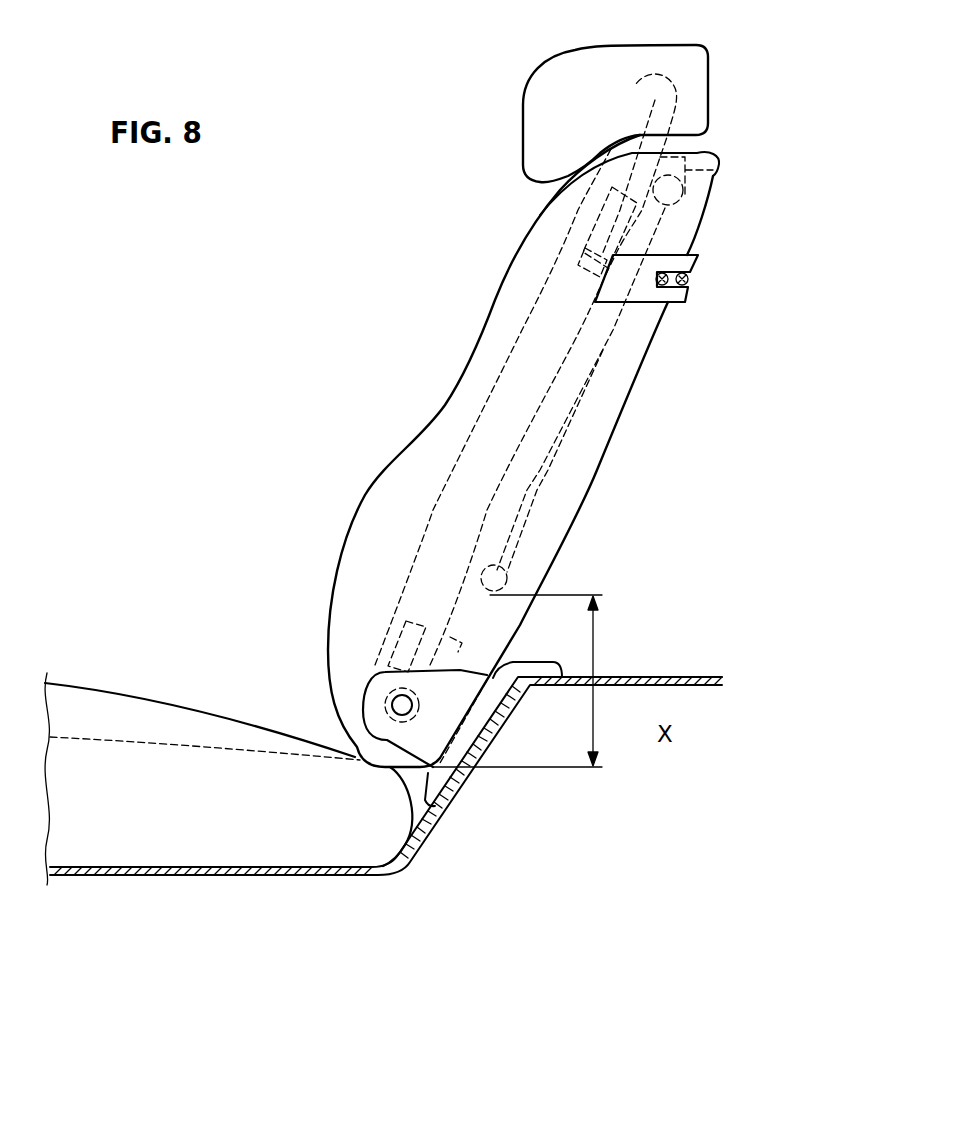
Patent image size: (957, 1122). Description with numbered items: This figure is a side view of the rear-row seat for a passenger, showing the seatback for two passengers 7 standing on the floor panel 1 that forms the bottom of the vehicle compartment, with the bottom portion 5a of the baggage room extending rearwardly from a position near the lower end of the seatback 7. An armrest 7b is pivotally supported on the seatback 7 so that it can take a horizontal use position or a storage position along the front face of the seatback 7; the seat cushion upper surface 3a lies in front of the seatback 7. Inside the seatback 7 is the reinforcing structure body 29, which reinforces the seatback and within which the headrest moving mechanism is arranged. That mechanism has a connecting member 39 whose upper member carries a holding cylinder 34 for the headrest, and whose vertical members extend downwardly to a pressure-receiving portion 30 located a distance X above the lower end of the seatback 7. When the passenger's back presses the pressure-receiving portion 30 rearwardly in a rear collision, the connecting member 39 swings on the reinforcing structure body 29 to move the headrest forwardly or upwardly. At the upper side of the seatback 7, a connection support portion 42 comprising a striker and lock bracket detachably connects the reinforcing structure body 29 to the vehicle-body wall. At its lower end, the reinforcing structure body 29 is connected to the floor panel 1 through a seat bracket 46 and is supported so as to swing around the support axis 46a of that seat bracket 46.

The floor panel 1 is at (168, 868).
The seat cushion upper surface 3a is at (131, 700).
The bottom portion of baggage room 5a is at (677, 678).
The seatback for two passengers 7 is at (468, 360).
The armrest 7b is at (563, 72).
The reinforcing structure body 29 is at (705, 192).
The pressure-receiving portion 30 is at (508, 575).
The holding cylinder for a headrest 34 is at (595, 223).
The connecting member 39 is at (556, 490).
The connection support portion 42 is at (677, 318).
The seat bracket 46 is at (422, 742).
The support axis of seat bracket 46a is at (393, 703).